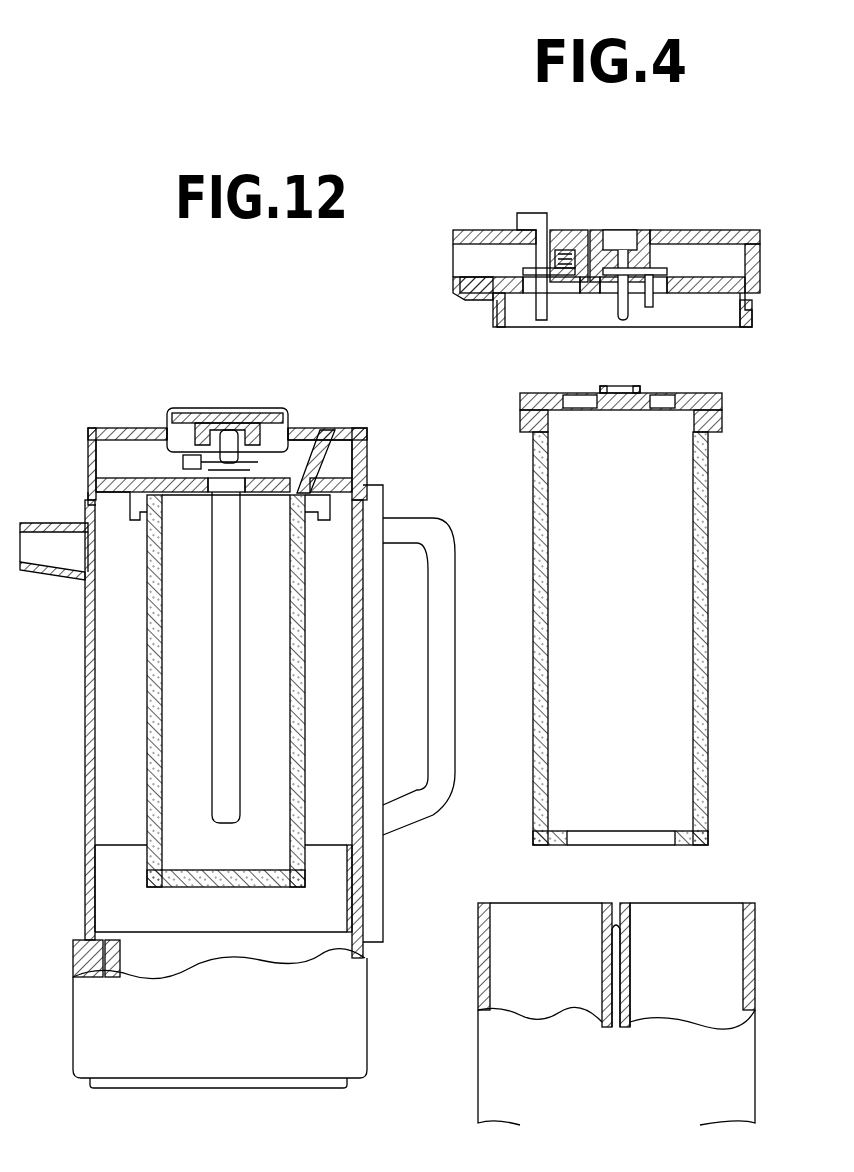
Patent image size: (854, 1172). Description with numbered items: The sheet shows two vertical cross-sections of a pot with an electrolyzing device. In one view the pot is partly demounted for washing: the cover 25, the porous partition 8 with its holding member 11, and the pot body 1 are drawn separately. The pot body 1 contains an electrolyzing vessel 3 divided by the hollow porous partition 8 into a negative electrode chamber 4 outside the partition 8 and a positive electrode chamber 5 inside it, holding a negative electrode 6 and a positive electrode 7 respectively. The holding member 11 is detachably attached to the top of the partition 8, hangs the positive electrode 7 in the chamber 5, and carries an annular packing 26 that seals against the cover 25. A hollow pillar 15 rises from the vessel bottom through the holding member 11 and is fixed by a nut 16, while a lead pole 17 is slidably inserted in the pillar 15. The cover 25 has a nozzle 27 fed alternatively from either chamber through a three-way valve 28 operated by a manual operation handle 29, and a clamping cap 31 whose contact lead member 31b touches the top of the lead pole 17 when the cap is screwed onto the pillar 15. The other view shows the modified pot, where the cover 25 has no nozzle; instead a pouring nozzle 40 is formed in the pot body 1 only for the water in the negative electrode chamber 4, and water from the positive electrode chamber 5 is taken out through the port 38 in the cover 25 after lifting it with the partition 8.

In FIG. 12, the pot body 1 is at (85, 722).
In FIG. 4, the pot body 1 is at (478, 965).
In FIG. 12, the electrolyzing vessel 3 is at (342, 607).
In FIG. 12, the negative electrode chamber 4 is at (336, 717).
In FIG. 4, the negative electrode chamber 4 is at (700, 1002).
In FIG. 12, the positive electrode chamber 5 is at (198, 708).
In FIG. 4, the positive electrode chamber 5 is at (632, 595).
In FIG. 12, the negative electrode 6 is at (100, 882).
In FIG. 4, the positive electrode 7 is at (616, 1028).
In FIG. 12, the porous partition 8 is at (147, 614).
In FIG. 4, the porous partition 8 is at (533, 554).
In FIG. 4, the holding member 11 is at (524, 410).
In FIG. 4, the hollow pillar 15 is at (612, 928).
In FIG. 4, the nut 16 is at (633, 392).
In FIG. 4, the lead pole 17 is at (622, 971).
In FIG. 12, the cover 25 is at (341, 406).
In FIG. 4, the cover 25 is at (700, 229).
In FIG. 12, the annular packing 26 is at (92, 494).
In FIG. 4, the annular packing 26 is at (496, 302).
In FIG. 4, the nozzle 27 is at (470, 293).
In FIG. 4, the three-way valve 28 is at (545, 211).
In FIG. 4, the manual operation handle 29 is at (520, 219).
In FIG. 4, the clamping cap 31 is at (614, 232).
In FIG. 4, the contact lead member 31b is at (625, 232).
In FIG. 12, the pouring inlet port 38 is at (302, 437).
In FIG. 12, the pouring nozzle 40 is at (60, 576).